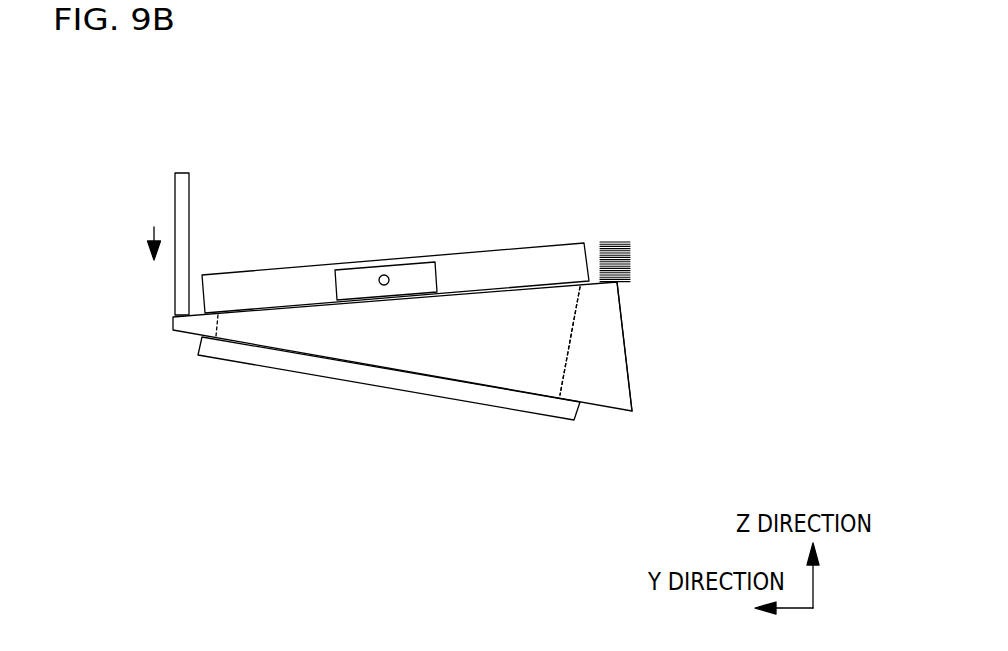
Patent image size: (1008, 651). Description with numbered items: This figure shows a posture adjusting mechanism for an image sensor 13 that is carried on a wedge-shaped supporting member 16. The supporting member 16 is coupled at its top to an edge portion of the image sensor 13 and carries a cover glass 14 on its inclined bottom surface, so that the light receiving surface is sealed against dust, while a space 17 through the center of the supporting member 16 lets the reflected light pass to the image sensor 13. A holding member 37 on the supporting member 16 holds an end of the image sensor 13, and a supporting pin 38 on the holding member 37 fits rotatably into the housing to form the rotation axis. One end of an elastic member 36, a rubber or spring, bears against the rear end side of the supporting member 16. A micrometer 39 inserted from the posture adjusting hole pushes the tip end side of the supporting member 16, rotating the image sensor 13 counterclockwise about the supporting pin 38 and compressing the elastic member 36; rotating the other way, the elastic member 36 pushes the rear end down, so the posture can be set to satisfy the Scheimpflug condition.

The image sensor 13 is at (238, 295).
The cover glass 14 is at (240, 352).
The supporting member 16 is at (598, 335).
The space 17 is at (444, 348).
The elastic member 36 is at (631, 262).
The holding member 37 is at (347, 277).
The supporting pin 38 is at (382, 268).
The micrometer 39 is at (188, 173).